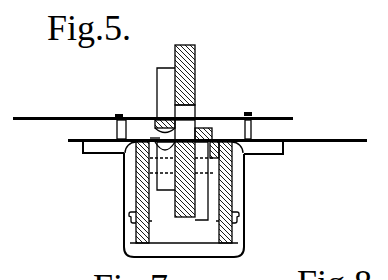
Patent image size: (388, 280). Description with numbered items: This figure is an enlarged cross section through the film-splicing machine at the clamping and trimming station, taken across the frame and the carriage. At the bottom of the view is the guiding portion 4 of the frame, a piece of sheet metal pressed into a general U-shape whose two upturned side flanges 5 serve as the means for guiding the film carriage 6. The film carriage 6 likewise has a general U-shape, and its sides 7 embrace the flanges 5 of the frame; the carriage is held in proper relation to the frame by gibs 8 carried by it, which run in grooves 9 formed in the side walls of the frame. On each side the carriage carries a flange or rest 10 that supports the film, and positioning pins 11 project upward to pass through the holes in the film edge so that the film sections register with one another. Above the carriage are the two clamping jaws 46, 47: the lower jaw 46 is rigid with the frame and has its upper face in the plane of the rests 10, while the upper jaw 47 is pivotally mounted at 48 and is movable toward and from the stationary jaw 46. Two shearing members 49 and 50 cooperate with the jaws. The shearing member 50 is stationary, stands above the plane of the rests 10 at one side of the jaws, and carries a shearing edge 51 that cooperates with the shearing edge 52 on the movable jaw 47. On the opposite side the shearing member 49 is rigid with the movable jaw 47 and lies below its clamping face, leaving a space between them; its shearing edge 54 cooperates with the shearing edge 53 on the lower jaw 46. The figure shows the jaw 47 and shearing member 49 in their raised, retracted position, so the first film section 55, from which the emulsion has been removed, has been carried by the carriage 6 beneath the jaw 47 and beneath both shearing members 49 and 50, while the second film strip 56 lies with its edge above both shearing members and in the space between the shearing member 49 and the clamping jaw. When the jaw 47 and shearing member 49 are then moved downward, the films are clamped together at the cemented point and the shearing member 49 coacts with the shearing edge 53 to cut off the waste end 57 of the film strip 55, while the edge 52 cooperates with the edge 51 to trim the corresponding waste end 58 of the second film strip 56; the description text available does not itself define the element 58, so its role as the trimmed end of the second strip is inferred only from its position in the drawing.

The guiding portion 4 is at (228, 140).
The side flanges 5 is at (137, 204).
The film carriage 6 is at (233, 253).
The sides 7 is at (124, 193).
The gibs 8 is at (133, 221).
The grooves 9 is at (214, 221).
The flange or rest 10 is at (283, 145).
The positioning pins 11 is at (117, 128).
The clamping jaw 46 is at (157, 156).
The clamping jaw 47 is at (175, 90).
The pivot 48 is at (176, 150).
The shearing member 49 is at (158, 120).
The shearing member 50 is at (210, 128).
The shearing edge 51 is at (197, 121).
The shearing edge 52 is at (195, 105).
The shearing edge 53 is at (157, 138).
The shearing edge 54 is at (156, 133).
The first film section 55 is at (355, 143).
The second film strip 56 is at (30, 117).
The waste end 57 is at (68, 140).
The upper plate edge 58 is at (283, 120).